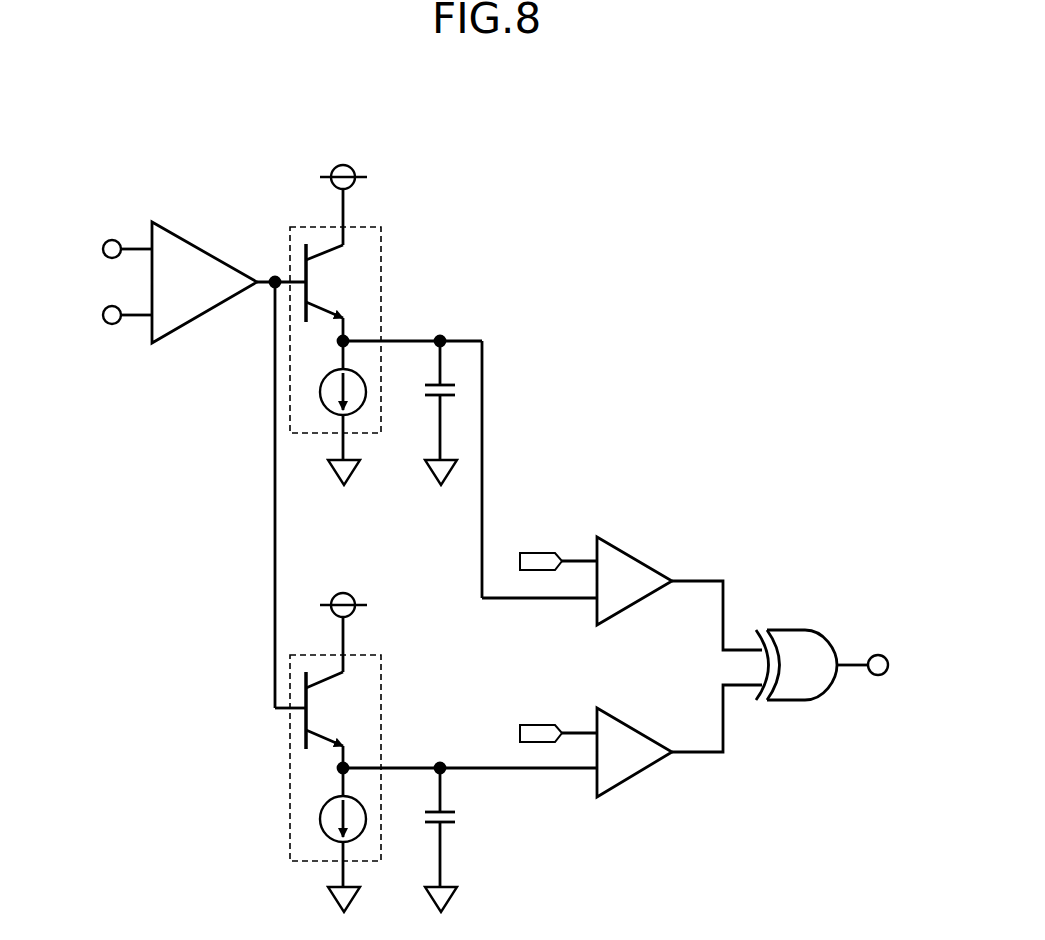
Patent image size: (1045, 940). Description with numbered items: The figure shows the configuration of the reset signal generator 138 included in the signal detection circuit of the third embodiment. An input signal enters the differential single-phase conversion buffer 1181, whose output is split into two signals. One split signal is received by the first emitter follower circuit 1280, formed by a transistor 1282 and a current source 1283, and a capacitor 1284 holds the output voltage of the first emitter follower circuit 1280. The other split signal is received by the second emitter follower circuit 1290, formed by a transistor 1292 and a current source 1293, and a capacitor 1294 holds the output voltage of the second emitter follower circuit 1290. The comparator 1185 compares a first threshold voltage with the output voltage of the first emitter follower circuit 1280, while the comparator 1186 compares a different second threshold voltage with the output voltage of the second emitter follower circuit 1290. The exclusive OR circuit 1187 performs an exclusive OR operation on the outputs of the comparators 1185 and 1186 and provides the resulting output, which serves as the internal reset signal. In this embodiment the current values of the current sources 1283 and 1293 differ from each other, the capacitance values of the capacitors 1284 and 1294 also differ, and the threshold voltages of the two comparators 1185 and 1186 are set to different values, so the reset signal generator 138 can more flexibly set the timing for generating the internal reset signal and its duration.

The reset signal generator 138 is at (588, 158).
The differential single-phase conversion buffer 1181 is at (193, 245).
The comparator 1185 is at (634, 557).
The comparator 1186 is at (634, 729).
The exclusive OR circuit 1187 is at (787, 628).
The first emitter follower circuit 1280 is at (384, 258).
The transistor 1282 is at (307, 297).
The current source 1283 is at (320, 391).
The capacitor 1284 is at (432, 398).
The second emitter follower circuit 1290 is at (384, 686).
The transistor 1292 is at (306, 725).
The current source 1293 is at (320, 818).
The capacitor 1294 is at (432, 825).